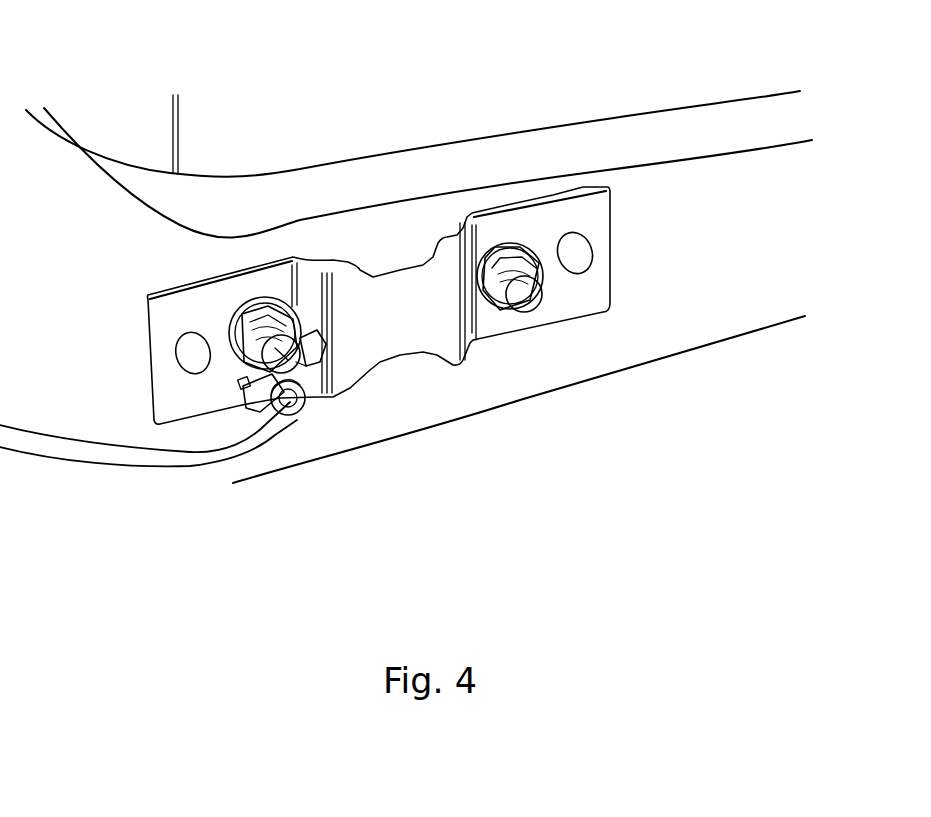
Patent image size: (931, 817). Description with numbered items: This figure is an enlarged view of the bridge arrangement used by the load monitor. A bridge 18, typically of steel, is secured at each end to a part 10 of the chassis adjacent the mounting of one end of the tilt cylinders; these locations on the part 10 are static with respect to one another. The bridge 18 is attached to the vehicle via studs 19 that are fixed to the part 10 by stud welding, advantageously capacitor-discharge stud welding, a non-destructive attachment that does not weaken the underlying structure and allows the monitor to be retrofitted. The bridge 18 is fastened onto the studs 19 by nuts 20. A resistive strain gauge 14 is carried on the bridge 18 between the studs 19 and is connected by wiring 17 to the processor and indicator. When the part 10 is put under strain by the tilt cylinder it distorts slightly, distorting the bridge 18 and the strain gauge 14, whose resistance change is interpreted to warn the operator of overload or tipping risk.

The part of the chassis 10 is at (203, 253).
The strain gauge 14 is at (410, 377).
The wiring 17 is at (247, 455).
The bridge 18 is at (410, 285).
The stud 19 is at (302, 386).
The nut 20 is at (268, 307).